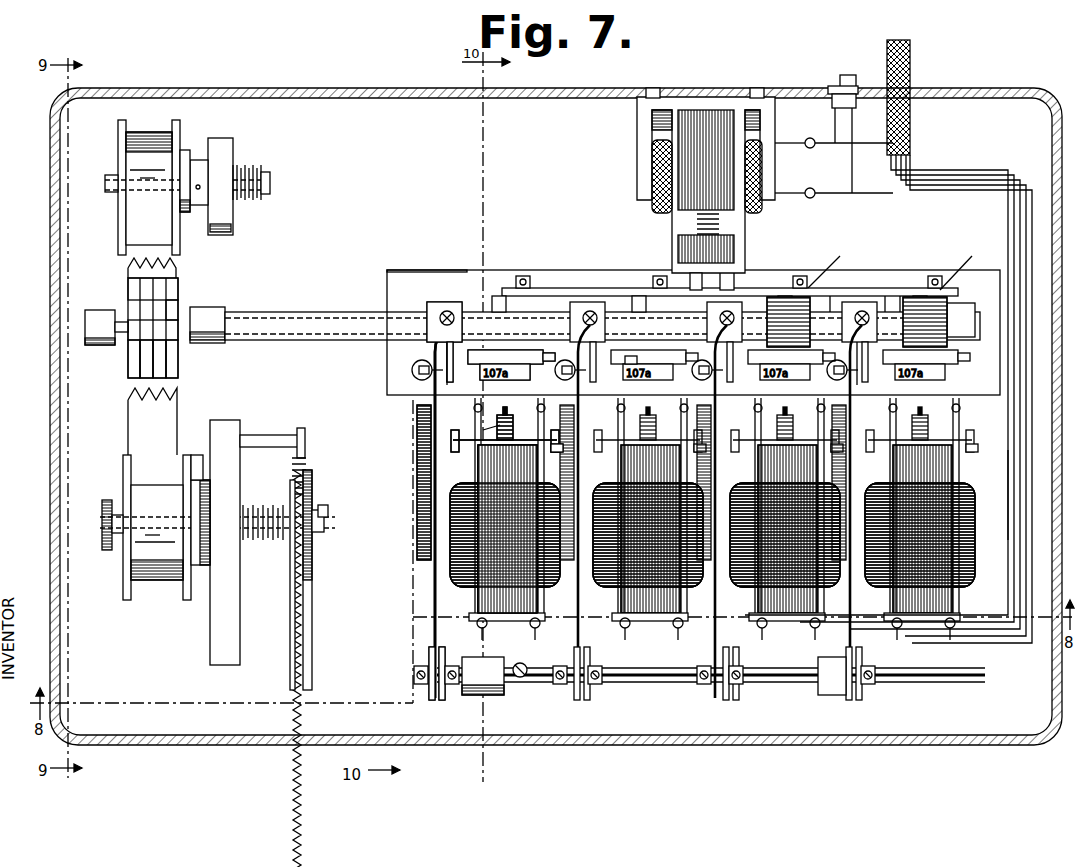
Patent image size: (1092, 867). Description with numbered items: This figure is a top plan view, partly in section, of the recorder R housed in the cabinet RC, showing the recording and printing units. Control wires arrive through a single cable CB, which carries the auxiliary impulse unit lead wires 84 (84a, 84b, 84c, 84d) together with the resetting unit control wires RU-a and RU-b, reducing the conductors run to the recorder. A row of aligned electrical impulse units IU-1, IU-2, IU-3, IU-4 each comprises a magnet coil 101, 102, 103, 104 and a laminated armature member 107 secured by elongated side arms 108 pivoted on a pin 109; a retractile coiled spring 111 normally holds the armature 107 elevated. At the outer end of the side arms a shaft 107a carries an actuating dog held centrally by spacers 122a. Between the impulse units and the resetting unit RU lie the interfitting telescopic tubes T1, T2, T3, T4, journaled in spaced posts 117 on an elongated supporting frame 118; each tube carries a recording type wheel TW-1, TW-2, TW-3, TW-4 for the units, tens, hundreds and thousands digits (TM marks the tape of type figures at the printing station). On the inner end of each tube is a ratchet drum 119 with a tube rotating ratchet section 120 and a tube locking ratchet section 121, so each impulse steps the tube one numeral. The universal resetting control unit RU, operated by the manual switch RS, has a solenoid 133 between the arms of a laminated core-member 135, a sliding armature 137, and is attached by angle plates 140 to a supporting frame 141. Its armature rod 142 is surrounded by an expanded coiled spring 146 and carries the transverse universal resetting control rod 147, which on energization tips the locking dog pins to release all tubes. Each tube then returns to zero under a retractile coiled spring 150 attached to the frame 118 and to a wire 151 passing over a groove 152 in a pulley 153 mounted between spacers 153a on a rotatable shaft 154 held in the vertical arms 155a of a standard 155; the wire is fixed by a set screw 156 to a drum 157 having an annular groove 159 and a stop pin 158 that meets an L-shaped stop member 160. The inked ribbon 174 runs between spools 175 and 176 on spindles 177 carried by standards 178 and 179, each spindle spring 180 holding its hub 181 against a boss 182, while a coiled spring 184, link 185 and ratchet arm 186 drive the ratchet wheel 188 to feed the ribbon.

The cabinet RC is at (398, 90).
The recorder R is at (455, 268).
The resetting control electric switch RS is at (846, 74).
The cable CB is at (912, 68).
The universal resetting control unit RU is at (693, 189).
The resetting unit control wire RU-a is at (834, 138).
The resetting unit control wire RU-b is at (834, 163).
The tape TM is at (130, 280).
The telescopic tube T1 is at (176, 310).
The telescopic tube T2 is at (162, 334).
The telescopic tube T3 is at (148, 312).
The telescopic tube T4 is at (138, 326).
The recording type wheel TW-1 is at (162, 376).
The recording type wheel TW-2 is at (170, 368).
The recording type wheel TW-3 is at (178, 357).
The recording type wheel TW-4 is at (132, 380).
The electrical impulse unit IU-1 is at (450, 518).
The electrical impulse unit IU-2 is at (706, 590).
The electrical impulse unit IU-3 is at (830, 590).
The electrical impulse unit IU-4 is at (966, 588).
The auxiliary impulse unit lead wires 84 is at (1003, 496).
The auxiliary impulse unit lead wire 84a is at (912, 630).
The auxiliary impulse unit lead wire 84b is at (950, 632).
The auxiliary impulse unit lead wire 84c is at (965, 638).
The auxiliary impulse unit lead wire 84d is at (1000, 648).
The magnet coil 101 is at (452, 585).
The magnet coil 102 is at (700, 580).
The magnet coil 103 is at (835, 582).
The magnet coil 104 is at (975, 567).
The armature member 107 is at (500, 548).
The shaft 107a is at (511, 365).
The side arms 108 is at (478, 440).
The pin 109 is at (970, 448).
The retractile coiled spring 111 is at (476, 429).
The posts 117 is at (215, 308).
The supporting frame 118 is at (405, 272).
The ratchet drum 119 is at (727, 275).
The tube rotating ratchet section 120 is at (498, 288).
The tube locking ratchet section 121 is at (528, 288).
The spacers 122a is at (955, 380).
The solenoid 133 is at (766, 178).
The core-member 135 is at (715, 175).
The armature 137 is at (690, 245).
The angle plates 140 is at (648, 128).
The supporting frame 141 is at (645, 180).
The armature rod 142 is at (735, 275).
The expanded coiled spring 146 is at (718, 222).
The universal resetting control rod 147 is at (830, 295).
The retractile coiled spring 150 is at (420, 452).
The wire 151 is at (432, 406).
The groove 152 is at (908, 298).
The pulley 153 is at (444, 700).
The spacers 153a is at (452, 664).
The rotatable shaft 154 is at (546, 668).
The standard 155 is at (642, 683).
The vertical arms 155a is at (470, 694).
The set screw 156 is at (445, 312).
The drum 157 is at (878, 300).
The stop pin 158 is at (428, 356).
The annular groove 159 is at (885, 295).
The L-shaped stop member 160 is at (670, 379).
The inked ribbon 174 is at (160, 252).
The spool 175 is at (133, 580).
The spool 176 is at (118, 236).
The spindles 177 is at (140, 183).
The standard 178 is at (220, 665).
The standard 179 is at (222, 155).
The expanded coiled spring 180 is at (248, 170).
The hub 181 is at (202, 205).
The boss 182 is at (205, 195).
The coiled spring 184 is at (290, 600).
The link 185 is at (312, 623).
The ratchet arm 186 is at (316, 530).
The ratchet wheel 188 is at (308, 478).